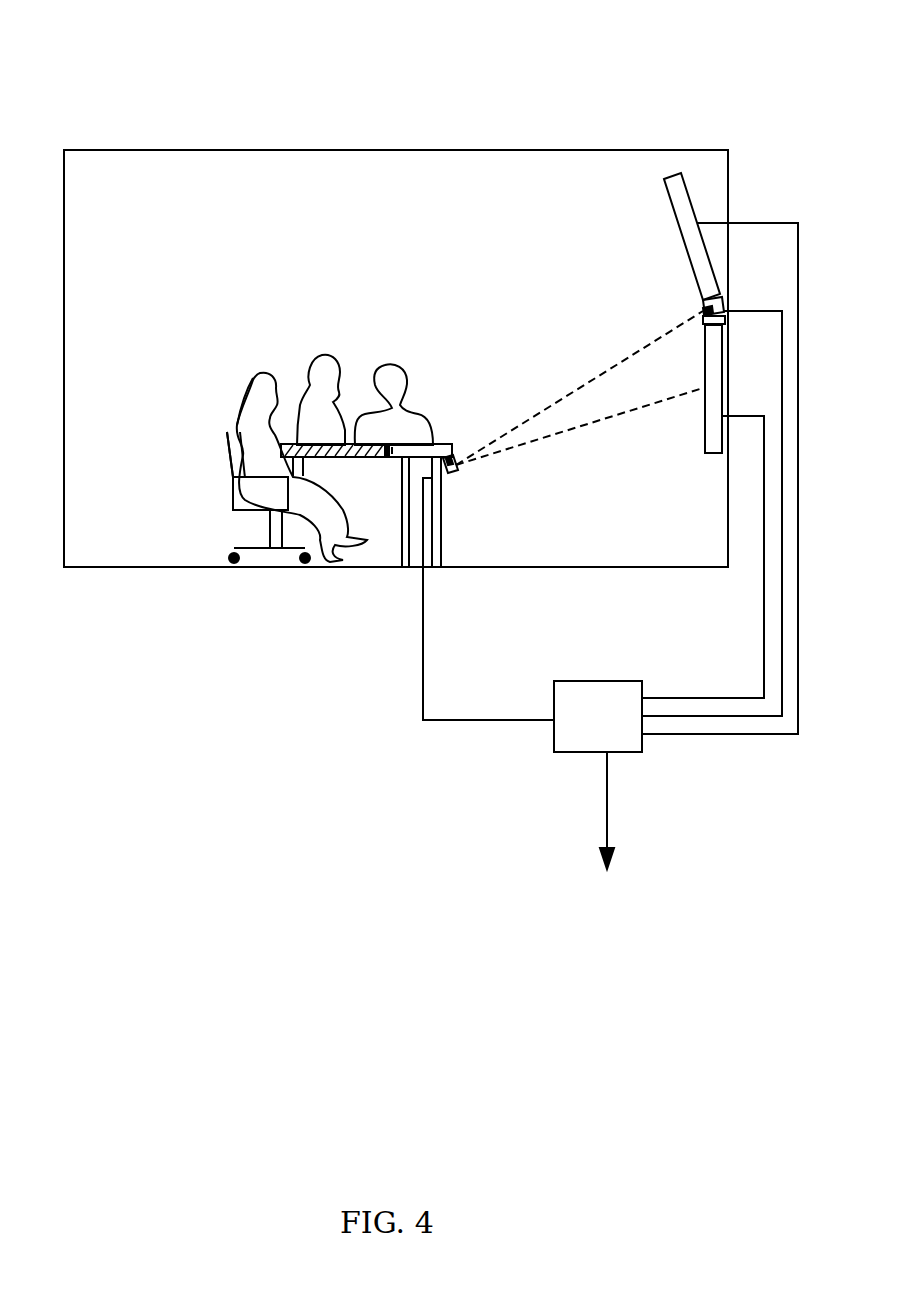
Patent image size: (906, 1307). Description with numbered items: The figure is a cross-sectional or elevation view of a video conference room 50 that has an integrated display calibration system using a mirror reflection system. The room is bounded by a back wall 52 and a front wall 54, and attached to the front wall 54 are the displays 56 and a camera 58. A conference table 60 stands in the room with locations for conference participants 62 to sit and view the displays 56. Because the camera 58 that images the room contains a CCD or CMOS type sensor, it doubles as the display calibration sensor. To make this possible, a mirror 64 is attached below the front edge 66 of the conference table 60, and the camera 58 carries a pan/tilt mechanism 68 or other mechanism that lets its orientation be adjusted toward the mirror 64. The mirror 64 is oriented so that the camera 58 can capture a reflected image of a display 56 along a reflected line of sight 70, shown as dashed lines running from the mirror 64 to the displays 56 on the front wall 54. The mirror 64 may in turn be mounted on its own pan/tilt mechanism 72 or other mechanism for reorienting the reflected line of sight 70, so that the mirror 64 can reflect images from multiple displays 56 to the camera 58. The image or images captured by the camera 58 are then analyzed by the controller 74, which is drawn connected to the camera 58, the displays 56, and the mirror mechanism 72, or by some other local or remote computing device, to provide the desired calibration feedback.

The video conference room 50 is at (138, 56).
The back wall 52 is at (64, 410).
The front wall 54 is at (728, 540).
The displays 56 is at (689, 228).
The camera 58 is at (701, 301).
The conference table 60 is at (345, 430).
The conference participants 62 is at (315, 370).
The mirror 64 is at (458, 470).
The front edge 66 is at (455, 447).
The pan/tilt mechanism 68 is at (702, 326).
The reflected line of sight 70 is at (630, 352).
The pan/tilt mechanism 72 is at (443, 487).
The controller 74 is at (676, 546).